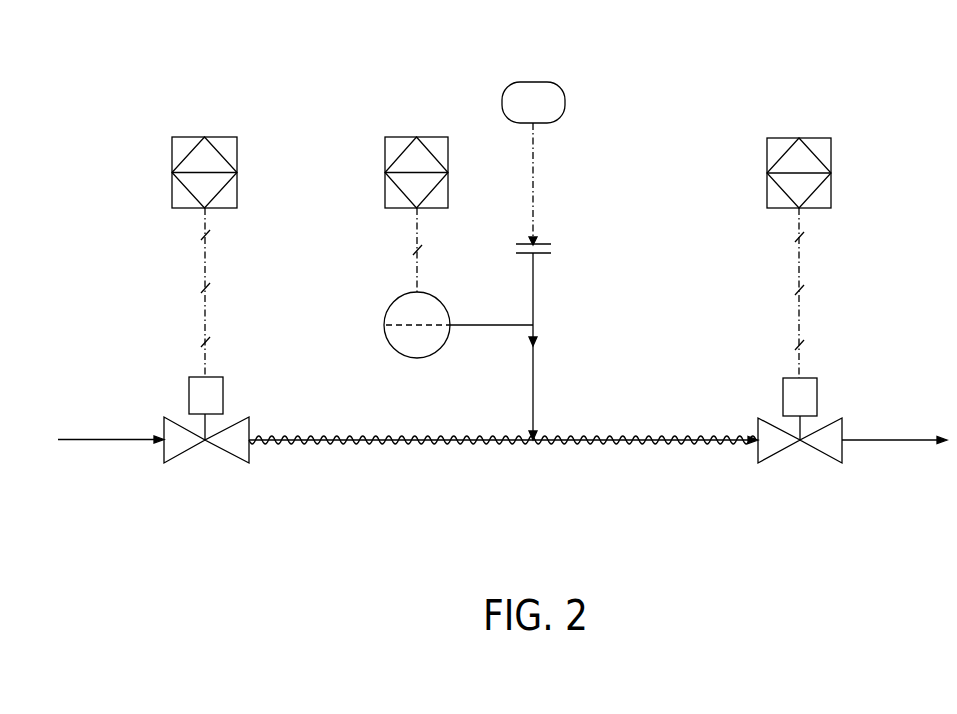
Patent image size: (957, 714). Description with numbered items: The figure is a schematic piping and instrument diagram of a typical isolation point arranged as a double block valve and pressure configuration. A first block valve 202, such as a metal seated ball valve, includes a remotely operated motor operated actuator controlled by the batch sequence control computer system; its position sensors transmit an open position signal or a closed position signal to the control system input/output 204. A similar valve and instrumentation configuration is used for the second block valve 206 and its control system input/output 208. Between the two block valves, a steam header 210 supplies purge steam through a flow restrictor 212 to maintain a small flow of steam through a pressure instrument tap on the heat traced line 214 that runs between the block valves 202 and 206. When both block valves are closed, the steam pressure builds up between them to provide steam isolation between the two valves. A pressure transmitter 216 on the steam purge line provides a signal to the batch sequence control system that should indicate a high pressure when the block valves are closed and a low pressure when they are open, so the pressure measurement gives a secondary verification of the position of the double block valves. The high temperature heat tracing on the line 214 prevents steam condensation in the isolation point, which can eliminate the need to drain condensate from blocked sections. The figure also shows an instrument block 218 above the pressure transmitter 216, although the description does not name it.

The first block valve 202 is at (237, 458).
The control system input/output 204 is at (238, 157).
The second block valve 206 is at (833, 463).
The control system input/output 208 is at (832, 148).
The steam header 210 is at (562, 98).
The flow restrictor 212 is at (550, 243).
The heat traced line 214 is at (580, 438).
The pressure transmitter 216 is at (388, 325).
The pressure transmitter controller 218 is at (385, 153).